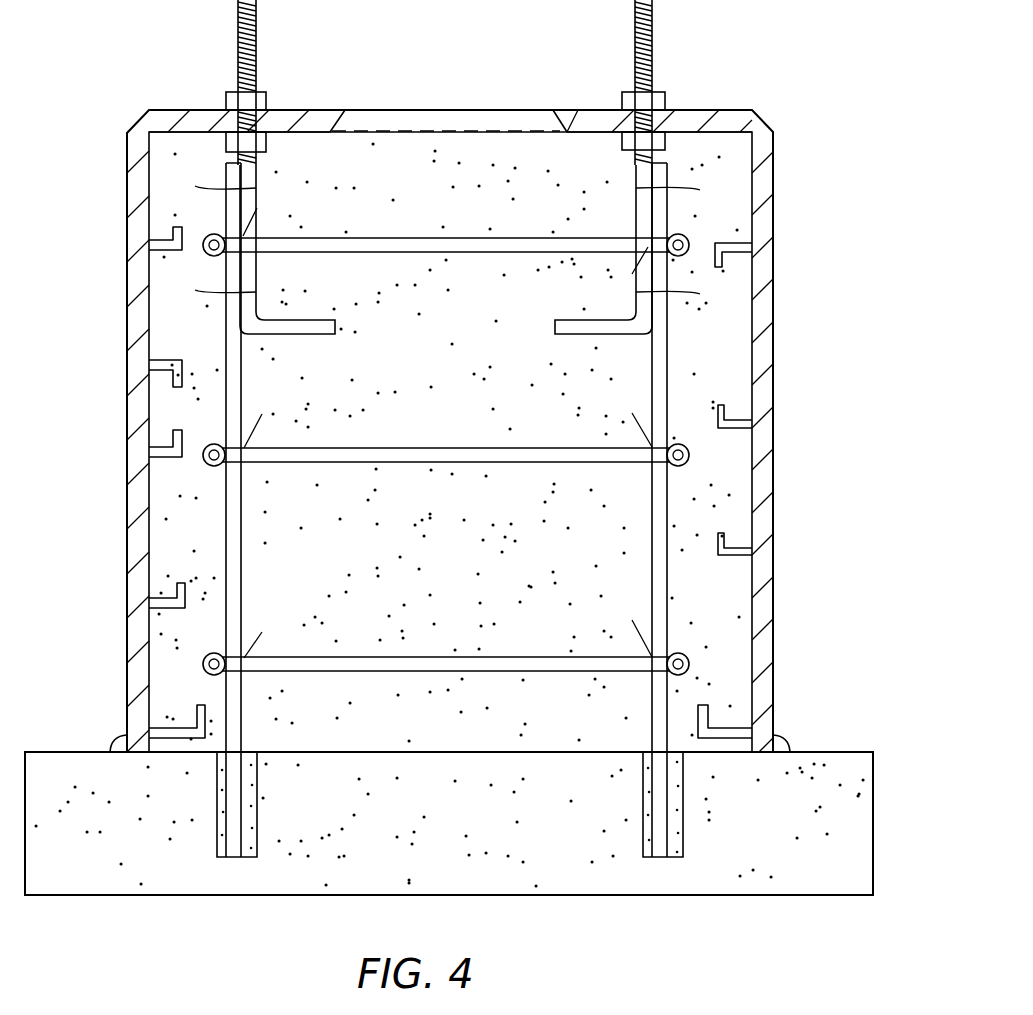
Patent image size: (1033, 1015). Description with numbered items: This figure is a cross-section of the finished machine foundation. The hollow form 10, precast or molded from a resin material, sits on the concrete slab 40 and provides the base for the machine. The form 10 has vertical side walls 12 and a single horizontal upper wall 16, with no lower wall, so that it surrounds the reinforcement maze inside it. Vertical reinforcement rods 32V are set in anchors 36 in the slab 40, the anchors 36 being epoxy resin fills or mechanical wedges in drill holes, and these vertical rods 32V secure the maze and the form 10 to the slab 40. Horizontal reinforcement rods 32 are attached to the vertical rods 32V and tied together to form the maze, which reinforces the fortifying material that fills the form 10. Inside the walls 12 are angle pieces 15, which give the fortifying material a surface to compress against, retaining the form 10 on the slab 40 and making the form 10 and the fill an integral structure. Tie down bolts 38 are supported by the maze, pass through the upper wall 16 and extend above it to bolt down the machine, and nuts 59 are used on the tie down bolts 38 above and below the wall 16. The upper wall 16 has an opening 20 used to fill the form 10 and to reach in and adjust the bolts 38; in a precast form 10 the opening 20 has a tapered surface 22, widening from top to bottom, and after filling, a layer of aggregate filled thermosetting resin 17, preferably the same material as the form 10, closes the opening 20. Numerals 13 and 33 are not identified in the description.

The hollow form 10 is at (784, 134).
The side walls 12 is at (766, 505).
The grout fillet 13 is at (780, 742).
The angle pieces 15 is at (745, 420).
The upper wall 16 is at (698, 112).
The layer of aggregate filled thermosetting resin 17 is at (443, 122).
The opening 20 is at (562, 116).
The tapered surface 22 is at (345, 117).
The horizontal reinforcement rods 32 is at (538, 232).
The vertical reinforcement rods 32V is at (665, 497).
The tie wires 33 is at (238, 290).
The anchors 36 is at (672, 800).
The tie down bolts 38 is at (650, 26).
The concrete slab 40 is at (862, 804).
The nuts 59 is at (266, 100).